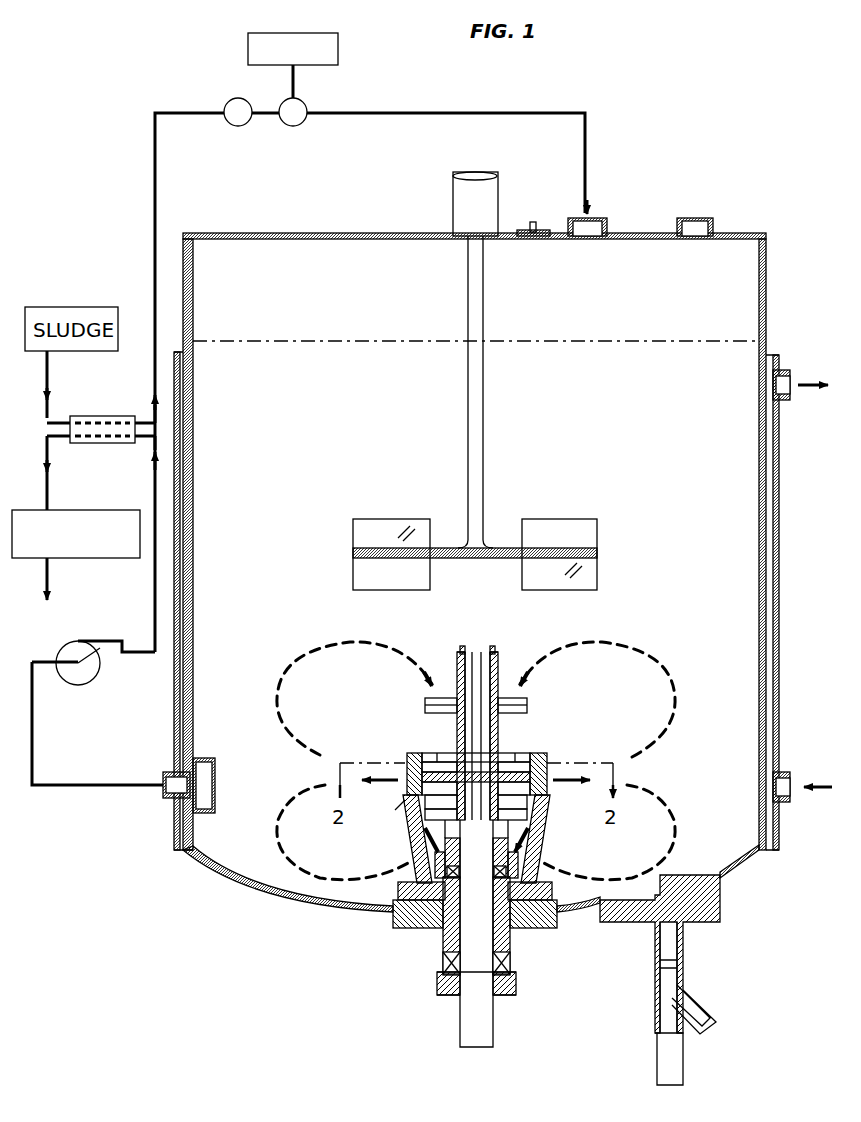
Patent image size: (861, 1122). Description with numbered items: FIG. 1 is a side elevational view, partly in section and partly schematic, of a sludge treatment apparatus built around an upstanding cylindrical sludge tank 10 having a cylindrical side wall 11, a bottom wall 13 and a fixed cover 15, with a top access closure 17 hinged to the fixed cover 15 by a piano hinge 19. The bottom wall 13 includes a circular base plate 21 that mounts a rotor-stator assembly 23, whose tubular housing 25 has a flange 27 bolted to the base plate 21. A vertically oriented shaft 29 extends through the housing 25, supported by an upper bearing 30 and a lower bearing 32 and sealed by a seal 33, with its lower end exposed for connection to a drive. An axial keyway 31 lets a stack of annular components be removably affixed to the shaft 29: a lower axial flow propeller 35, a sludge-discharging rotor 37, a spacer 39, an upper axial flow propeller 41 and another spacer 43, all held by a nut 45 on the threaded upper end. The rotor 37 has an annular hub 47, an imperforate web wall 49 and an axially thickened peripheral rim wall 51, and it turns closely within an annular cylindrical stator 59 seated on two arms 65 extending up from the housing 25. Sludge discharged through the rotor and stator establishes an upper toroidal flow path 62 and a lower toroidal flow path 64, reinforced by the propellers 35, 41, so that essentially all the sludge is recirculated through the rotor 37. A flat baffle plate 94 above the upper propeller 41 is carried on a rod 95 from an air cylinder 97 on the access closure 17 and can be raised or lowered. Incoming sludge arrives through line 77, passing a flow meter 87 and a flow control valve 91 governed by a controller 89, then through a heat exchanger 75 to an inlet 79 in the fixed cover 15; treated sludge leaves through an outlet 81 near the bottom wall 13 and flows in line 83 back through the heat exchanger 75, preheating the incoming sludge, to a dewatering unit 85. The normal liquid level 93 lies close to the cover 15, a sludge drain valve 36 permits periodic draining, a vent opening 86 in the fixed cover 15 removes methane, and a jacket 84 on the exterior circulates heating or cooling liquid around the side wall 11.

The sludge tank 10 is at (505, 553).
The side wall 11 is at (193, 452).
The bottom wall 13 is at (292, 903).
The fixed cover 15 is at (646, 236).
The top access closure 17 is at (298, 232).
The piano hinge 19 is at (532, 226).
The circular base plate 21 is at (420, 900).
The rotor-stator assembly 23 is at (474, 747).
The tubular housing 25 is at (526, 900).
The flange 27 is at (400, 905).
The shaft 29 is at (495, 706).
The upper bearing 30 is at (555, 868).
The axial keyway 31 is at (468, 728).
The lower bearing 32 is at (440, 990).
The seal 33 is at (460, 840).
The lower axial flow propeller 35 is at (425, 836).
The sludge drain valve 36 is at (683, 968).
The sludge-discharging rotor 37 is at (506, 772).
The spacer 39 is at (468, 740).
The upper axial flow propeller 41 is at (432, 702).
The spacer 43 is at (495, 666).
The nut 45 is at (460, 652).
The annular hub 47 is at (470, 748).
The web wall 49 is at (530, 790).
The rim wall 51 is at (547, 762).
The stator 59 is at (410, 792).
The upper toroidal flow path 62 is at (300, 650).
The lower toroidal flow path 64 is at (282, 812).
The arms 65 is at (425, 884).
The heat exchanger 75 is at (100, 443).
The line 77 is at (155, 194).
The inlet 79 is at (585, 238).
The outlet 81 is at (165, 795).
The line 83 is at (32, 730).
The jacket 84 is at (180, 528).
The dewatering unit 85 is at (80, 558).
The vent opening 86 is at (695, 228).
The flow meter 87 is at (229, 102).
The controller 89 is at (248, 42).
The flow control valve 91 is at (304, 106).
The liquid level 93 is at (318, 341).
The baffle plate 94 is at (385, 548).
The rod 95 is at (483, 410).
The air cylinder 97 is at (453, 198).